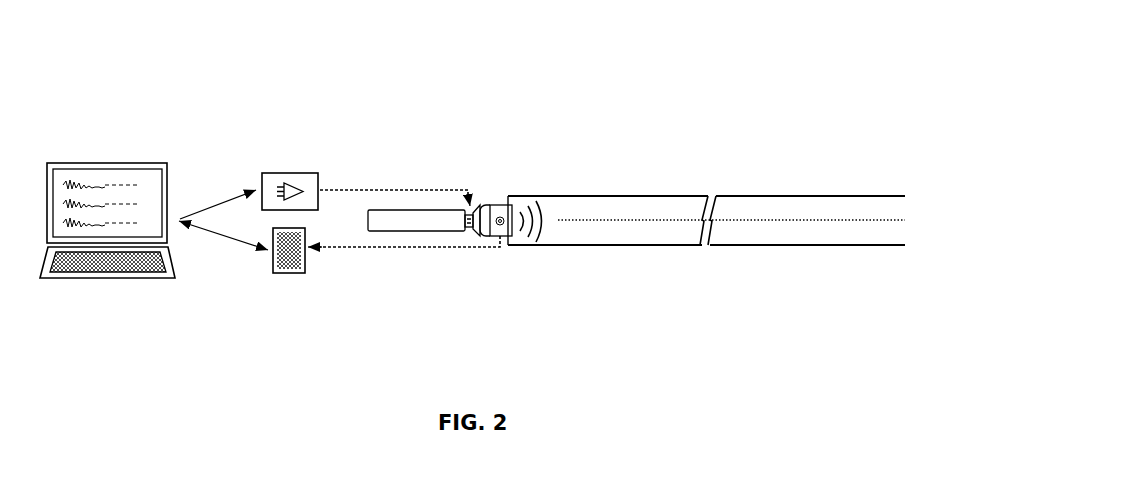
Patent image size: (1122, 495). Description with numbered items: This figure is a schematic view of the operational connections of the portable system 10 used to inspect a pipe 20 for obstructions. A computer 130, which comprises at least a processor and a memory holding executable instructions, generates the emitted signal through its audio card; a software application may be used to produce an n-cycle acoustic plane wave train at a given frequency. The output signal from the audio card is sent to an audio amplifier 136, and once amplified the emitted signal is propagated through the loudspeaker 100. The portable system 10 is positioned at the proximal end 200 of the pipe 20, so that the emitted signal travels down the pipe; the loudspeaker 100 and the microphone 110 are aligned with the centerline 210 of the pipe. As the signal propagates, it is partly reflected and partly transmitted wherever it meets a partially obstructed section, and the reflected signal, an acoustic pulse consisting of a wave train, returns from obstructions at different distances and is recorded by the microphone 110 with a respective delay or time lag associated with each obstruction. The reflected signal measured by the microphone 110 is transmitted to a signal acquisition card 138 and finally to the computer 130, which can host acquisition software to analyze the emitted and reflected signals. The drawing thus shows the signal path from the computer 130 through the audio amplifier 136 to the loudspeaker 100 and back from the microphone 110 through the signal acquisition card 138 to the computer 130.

The portable system 10 is at (510, 171).
The pipe 20 is at (706, 208).
The loudspeaker 100 is at (465, 237).
The microphone 110 is at (518, 237).
The computer 130 is at (108, 161).
The audio amplifier 136 is at (287, 171).
The signal acquisition card 138 is at (290, 276).
The proximal end 200 is at (509, 253).
The centerline 210 is at (821, 227).